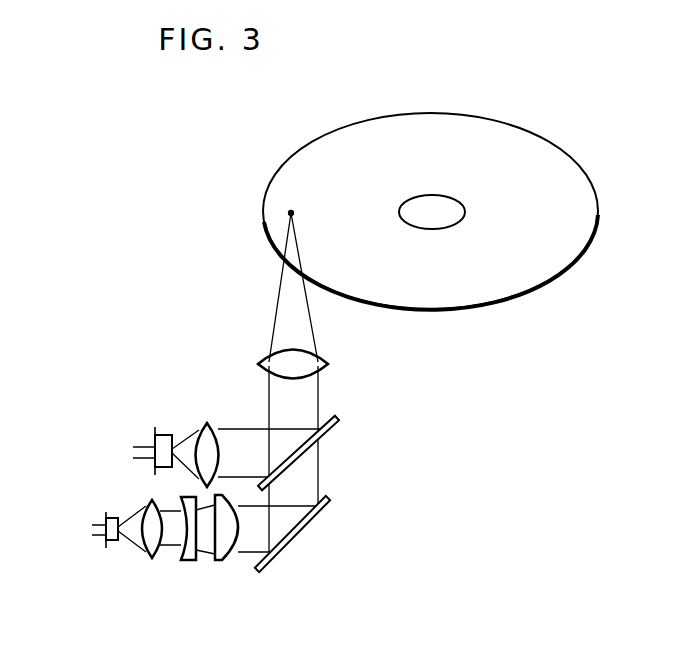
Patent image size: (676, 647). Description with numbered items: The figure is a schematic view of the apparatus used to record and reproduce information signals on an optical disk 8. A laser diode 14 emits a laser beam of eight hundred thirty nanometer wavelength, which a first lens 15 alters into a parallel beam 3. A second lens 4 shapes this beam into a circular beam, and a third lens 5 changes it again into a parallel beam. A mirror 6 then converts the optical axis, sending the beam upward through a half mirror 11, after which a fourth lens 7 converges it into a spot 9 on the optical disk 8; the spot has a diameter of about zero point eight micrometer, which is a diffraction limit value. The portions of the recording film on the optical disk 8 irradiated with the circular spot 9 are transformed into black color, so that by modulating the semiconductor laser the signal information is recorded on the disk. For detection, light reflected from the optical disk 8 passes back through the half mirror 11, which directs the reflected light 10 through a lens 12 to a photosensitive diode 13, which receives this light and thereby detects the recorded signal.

The parallel beam 3 is at (175, 543).
The second lens 4 is at (188, 556).
The third lens 5 is at (223, 558).
The mirror 6 is at (332, 500).
The objective lens 7 is at (328, 364).
The optical disk 8 is at (537, 285).
The spot 9 is at (290, 213).
The light beam 10 is at (237, 438).
The half mirror 11 is at (338, 423).
The lens 12 is at (206, 427).
The photosensitive diode 13 is at (165, 437).
The laser diode 14 is at (113, 513).
The first lens 15 is at (150, 553).